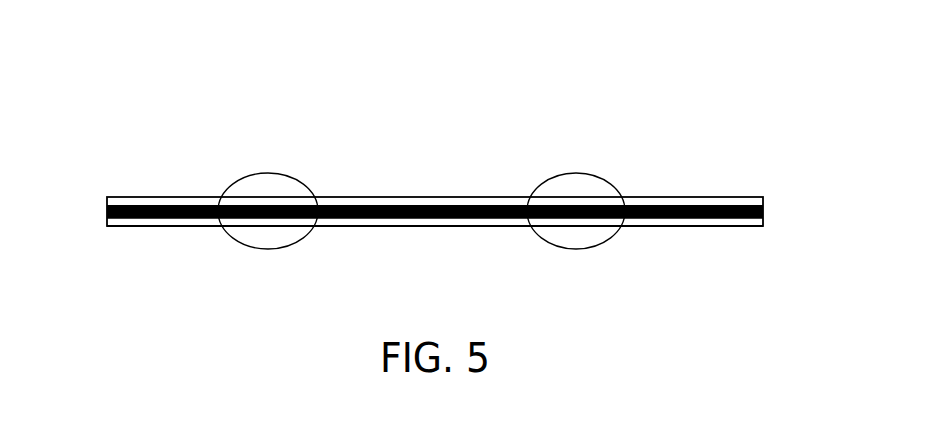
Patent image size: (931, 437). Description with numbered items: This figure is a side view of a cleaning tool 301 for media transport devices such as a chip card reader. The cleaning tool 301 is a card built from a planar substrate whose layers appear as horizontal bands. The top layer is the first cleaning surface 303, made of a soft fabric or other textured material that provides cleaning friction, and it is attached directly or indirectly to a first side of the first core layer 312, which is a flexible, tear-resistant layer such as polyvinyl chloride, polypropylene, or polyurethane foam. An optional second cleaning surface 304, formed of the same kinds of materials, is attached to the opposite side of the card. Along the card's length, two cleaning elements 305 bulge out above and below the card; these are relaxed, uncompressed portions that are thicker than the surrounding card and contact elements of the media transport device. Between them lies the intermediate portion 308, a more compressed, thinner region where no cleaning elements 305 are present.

The cleaning tool 301 is at (190, 58).
The first cleaning surface 303 is at (688, 197).
The second cleaning surface 304 is at (185, 226).
The cleaning element 305 is at (270, 182).
The intermediate portion 308 is at (412, 187).
The first core layer 312 is at (343, 217).